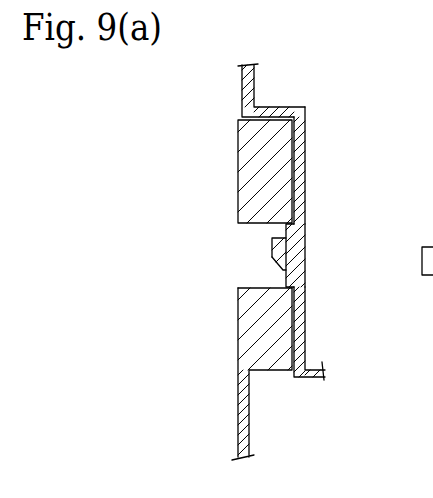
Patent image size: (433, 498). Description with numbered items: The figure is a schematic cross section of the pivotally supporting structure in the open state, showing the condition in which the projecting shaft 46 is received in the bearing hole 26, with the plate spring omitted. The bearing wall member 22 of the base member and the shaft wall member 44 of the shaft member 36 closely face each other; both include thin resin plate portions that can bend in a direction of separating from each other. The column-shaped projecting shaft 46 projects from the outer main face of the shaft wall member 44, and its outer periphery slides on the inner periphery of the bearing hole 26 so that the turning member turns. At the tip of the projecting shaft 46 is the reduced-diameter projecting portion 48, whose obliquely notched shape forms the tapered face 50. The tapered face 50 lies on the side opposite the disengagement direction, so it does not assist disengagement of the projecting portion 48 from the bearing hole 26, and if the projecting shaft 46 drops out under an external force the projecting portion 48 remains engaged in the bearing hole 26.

The bearing wall member 22 is at (238, 349).
The bearing hole 26 is at (240, 287).
The shaft member 36 is at (313, 222).
The shaft wall member 44 is at (306, 128).
The projecting shaft 46 is at (305, 262).
The projecting portion 48 is at (272, 246).
The tapered face 50 is at (279, 266).